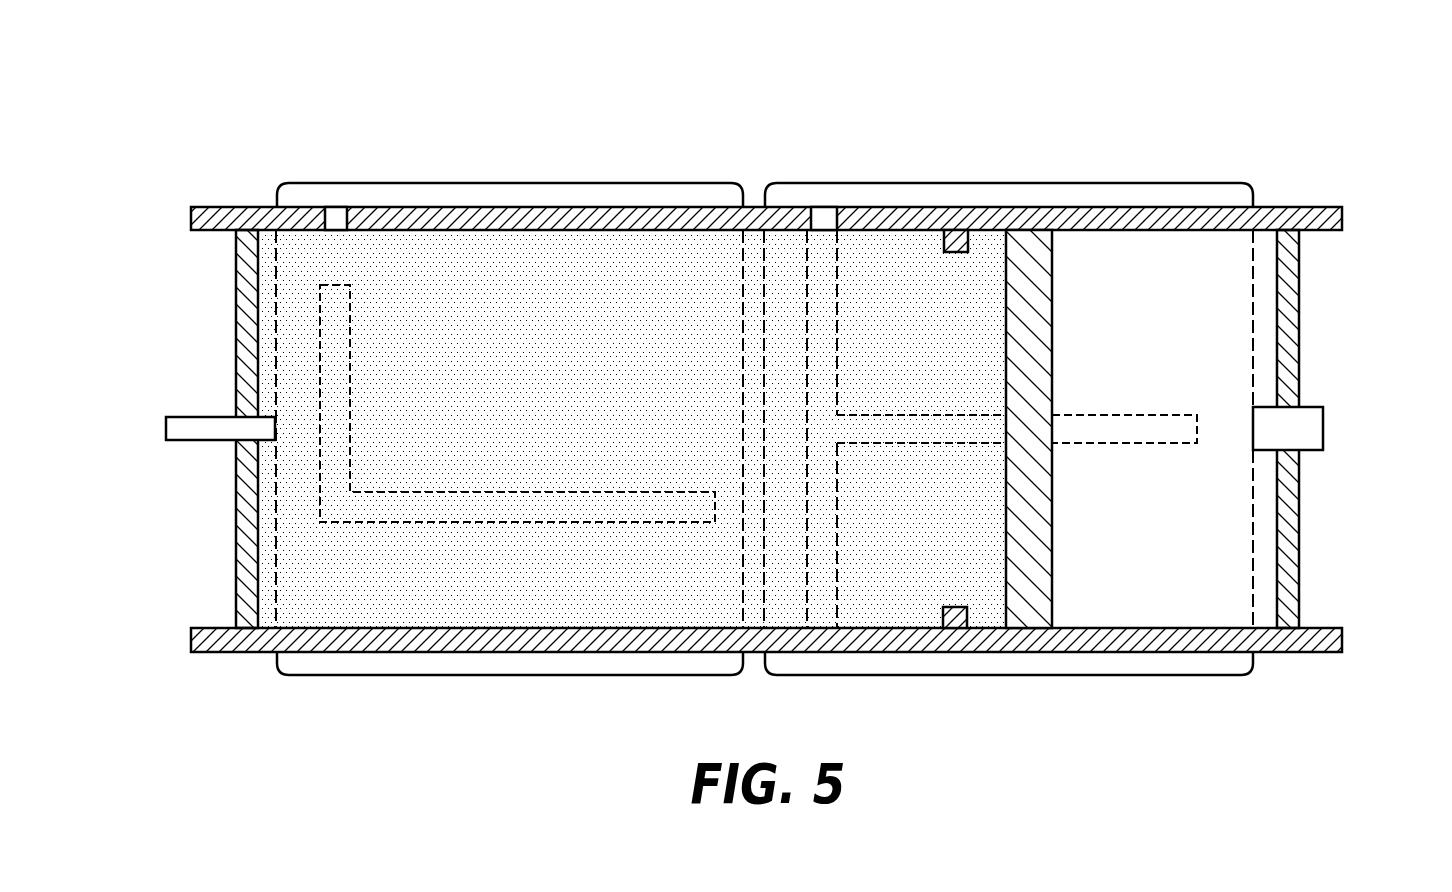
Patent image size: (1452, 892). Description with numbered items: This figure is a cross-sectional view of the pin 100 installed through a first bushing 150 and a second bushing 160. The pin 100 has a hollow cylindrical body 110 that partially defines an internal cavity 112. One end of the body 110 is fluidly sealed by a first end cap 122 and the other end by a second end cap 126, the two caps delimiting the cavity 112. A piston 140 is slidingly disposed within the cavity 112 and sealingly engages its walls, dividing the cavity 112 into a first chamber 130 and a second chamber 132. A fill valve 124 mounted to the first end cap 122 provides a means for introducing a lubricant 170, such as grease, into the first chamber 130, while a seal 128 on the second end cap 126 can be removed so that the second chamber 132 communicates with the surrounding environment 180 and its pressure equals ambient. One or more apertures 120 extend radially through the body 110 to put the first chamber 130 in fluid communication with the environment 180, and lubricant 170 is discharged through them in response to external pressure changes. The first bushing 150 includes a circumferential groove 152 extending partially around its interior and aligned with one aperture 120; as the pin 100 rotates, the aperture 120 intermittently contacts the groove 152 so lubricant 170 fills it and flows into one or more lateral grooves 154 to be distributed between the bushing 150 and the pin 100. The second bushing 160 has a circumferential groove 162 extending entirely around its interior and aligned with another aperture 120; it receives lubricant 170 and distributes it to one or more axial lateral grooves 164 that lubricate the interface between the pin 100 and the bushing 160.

The pin 100 is at (1352, 200).
The hollow cylindrical body 110 is at (1282, 205).
The internal cavity 112 is at (985, 122).
The apertures 120 is at (343, 192).
The first end cap 122 is at (236, 545).
The fill valve 124 is at (180, 430).
The second end cap 126 is at (1299, 333).
The seal 128 is at (1320, 430).
The first chamber 130 is at (928, 286).
The second chamber 132 is at (1140, 284).
The piston 140 is at (1028, 612).
The first bushing 150 is at (393, 678).
The circumferential groove 152 is at (320, 358).
The lateral grooves 154 is at (500, 522).
The second bushing 160 is at (975, 677).
The circumferential groove 162 is at (838, 270).
The lateral grooves 164 is at (1113, 443).
The lubricant 170 is at (655, 594).
The environment 180 is at (176, 76).